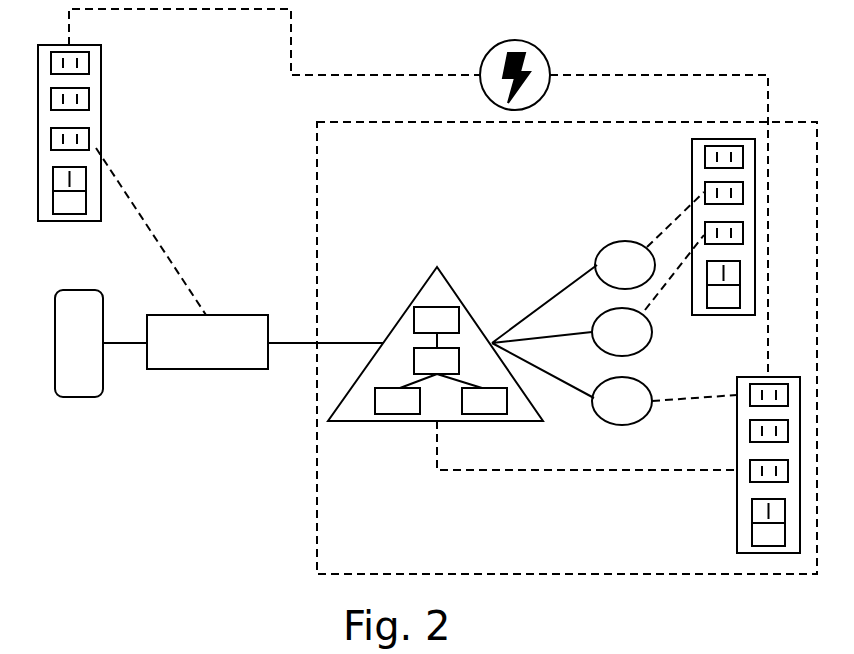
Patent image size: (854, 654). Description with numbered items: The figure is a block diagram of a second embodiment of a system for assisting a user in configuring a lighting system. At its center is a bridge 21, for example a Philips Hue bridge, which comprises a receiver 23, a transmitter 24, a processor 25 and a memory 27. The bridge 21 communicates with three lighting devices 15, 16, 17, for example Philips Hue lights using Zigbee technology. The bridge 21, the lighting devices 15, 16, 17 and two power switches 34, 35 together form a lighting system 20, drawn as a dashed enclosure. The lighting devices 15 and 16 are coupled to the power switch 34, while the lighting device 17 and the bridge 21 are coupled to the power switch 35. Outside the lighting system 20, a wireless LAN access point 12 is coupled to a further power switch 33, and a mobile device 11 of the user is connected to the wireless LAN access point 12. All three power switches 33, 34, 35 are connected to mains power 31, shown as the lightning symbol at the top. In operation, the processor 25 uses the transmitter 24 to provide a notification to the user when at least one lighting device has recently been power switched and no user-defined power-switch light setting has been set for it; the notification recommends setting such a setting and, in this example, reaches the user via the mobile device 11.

The mobile device 11 is at (79, 343).
The wireless LAN access point 12 is at (207, 342).
The lighting device 15 is at (625, 265).
The lighting device 16 is at (622, 332).
The lighting device 17 is at (622, 401).
The lighting system 20 is at (365, 161).
The bridge 21 is at (332, 421).
The receiver 23 is at (397, 402).
The transmitter 24 is at (484, 402).
The processor 25 is at (441, 368).
The memory 27 is at (436, 327).
The mains power 31 is at (538, 47).
The power switch 33 is at (101, 103).
The power switch 34 is at (692, 157).
The power switch 35 is at (737, 530).